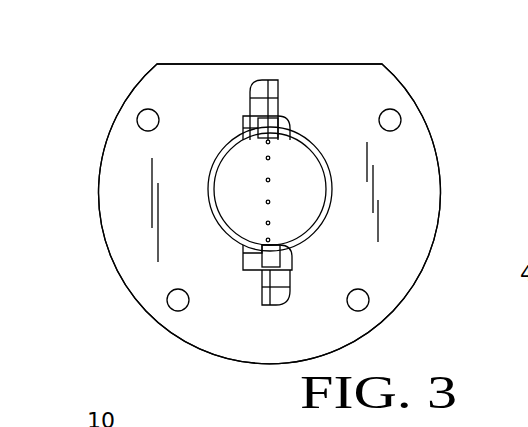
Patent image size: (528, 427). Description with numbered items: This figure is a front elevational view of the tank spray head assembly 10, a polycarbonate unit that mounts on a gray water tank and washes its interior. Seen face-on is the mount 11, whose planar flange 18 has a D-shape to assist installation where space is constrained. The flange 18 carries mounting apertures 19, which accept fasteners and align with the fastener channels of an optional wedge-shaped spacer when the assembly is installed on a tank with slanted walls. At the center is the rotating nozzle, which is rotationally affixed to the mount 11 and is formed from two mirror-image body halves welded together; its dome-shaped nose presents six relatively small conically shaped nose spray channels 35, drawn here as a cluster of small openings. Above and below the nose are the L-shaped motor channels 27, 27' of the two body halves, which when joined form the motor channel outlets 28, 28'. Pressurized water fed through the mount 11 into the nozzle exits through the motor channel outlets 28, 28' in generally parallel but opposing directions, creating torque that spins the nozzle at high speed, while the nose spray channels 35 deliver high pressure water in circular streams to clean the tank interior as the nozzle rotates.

The spray head assembly 10 is at (461, 300).
The mount 11 is at (426, 170).
The planar flange 18 is at (425, 213).
The mounting apertures 19 is at (130, 104).
The motor channel 27 is at (305, 253).
The motor channel 27' is at (226, 109).
The motor channel outlet 28 is at (304, 110).
The motor channel outlet 28' is at (238, 283).
The nose spray channels 35 is at (280, 151).